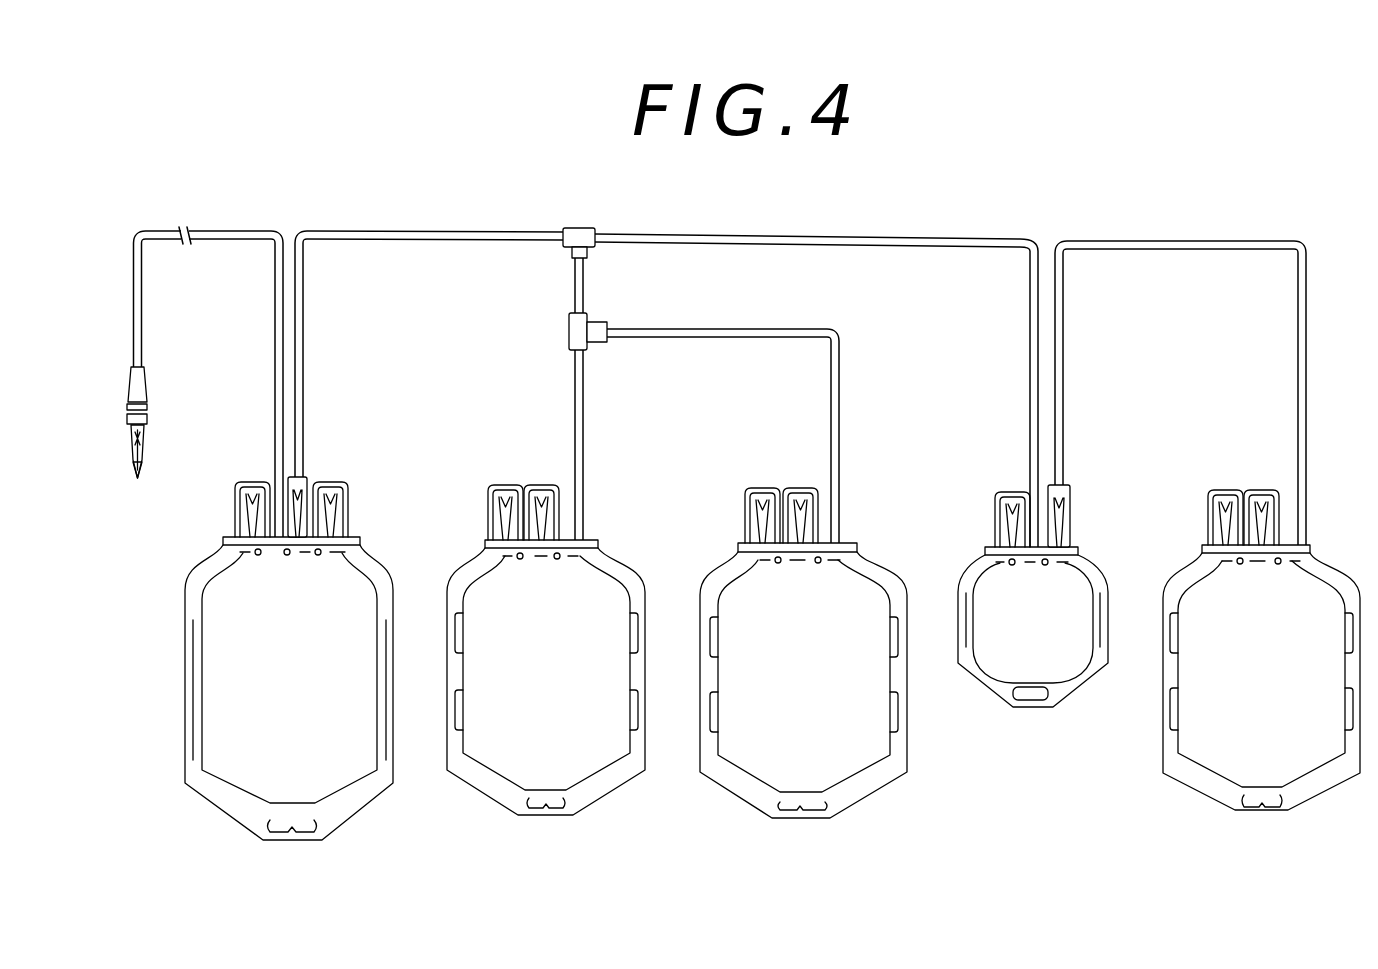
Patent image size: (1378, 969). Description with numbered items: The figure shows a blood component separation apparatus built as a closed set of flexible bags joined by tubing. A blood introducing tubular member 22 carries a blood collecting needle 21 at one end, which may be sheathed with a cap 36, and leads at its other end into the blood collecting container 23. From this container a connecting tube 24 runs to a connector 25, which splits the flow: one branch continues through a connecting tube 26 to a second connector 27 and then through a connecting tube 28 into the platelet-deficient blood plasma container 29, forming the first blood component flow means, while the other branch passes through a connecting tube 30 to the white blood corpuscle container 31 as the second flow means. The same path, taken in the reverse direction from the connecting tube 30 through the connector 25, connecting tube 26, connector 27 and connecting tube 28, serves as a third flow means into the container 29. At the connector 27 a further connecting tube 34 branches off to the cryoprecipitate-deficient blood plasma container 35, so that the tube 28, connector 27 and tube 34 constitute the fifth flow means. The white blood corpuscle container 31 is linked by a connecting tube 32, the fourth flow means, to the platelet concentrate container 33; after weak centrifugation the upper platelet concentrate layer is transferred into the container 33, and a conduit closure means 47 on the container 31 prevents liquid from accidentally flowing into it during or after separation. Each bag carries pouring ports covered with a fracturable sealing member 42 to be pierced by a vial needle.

The blood collecting needle 21 is at (148, 445).
The blood introducing tubular member 22 is at (230, 240).
The blood collecting container 23 is at (220, 780).
The connecting tube 24 is at (377, 238).
The connector 25 is at (587, 253).
The connecting tube 26 is at (573, 283).
The connector 27 is at (577, 332).
The connecting tube 28 is at (575, 443).
The platelet-deficient blood plasma container 29 is at (495, 753).
The connecting tube 30 is at (930, 248).
The white blood corpuscle container 31 is at (997, 653).
The connecting tube 32 is at (1167, 250).
The platelet concentrate container 33 is at (1200, 753).
The connecting tube 34 is at (723, 333).
The cryoprecipitate-deficient blood plasma container 35 is at (748, 753).
The cap 36 is at (132, 468).
The fracturable sealing member 42 is at (247, 493).
The conduit closure means 47 is at (305, 487).